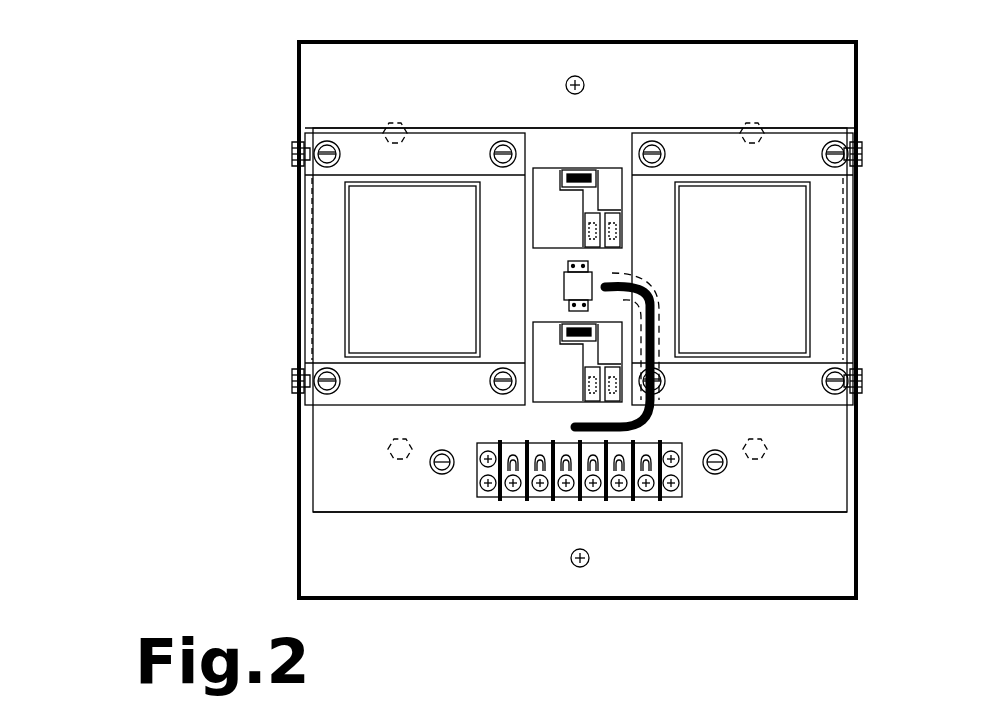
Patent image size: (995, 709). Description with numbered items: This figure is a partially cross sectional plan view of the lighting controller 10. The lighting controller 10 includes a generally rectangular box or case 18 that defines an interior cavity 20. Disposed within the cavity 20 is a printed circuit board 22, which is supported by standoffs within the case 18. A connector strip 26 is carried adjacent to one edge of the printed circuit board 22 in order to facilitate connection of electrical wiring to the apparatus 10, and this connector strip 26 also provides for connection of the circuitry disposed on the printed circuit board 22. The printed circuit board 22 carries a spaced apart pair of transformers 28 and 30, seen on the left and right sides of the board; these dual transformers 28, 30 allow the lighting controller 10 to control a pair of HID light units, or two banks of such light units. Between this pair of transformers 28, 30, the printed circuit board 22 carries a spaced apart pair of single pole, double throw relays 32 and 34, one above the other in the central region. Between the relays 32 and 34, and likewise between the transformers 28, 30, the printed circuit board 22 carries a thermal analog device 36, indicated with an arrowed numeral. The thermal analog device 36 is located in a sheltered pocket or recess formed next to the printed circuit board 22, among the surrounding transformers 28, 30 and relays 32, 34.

The lighting controller 10 is at (266, 510).
The case 18 is at (298, 81).
The interior cavity 20 is at (694, 567).
The printed circuit board 22 is at (350, 497).
The connector strip 26 is at (514, 514).
The transformer 28 is at (434, 272).
The transformer 30 is at (770, 290).
The SPDT relay 32 is at (545, 178).
The SPDT relay 34 is at (548, 405).
The thermal analog device 36 is at (538, 302).